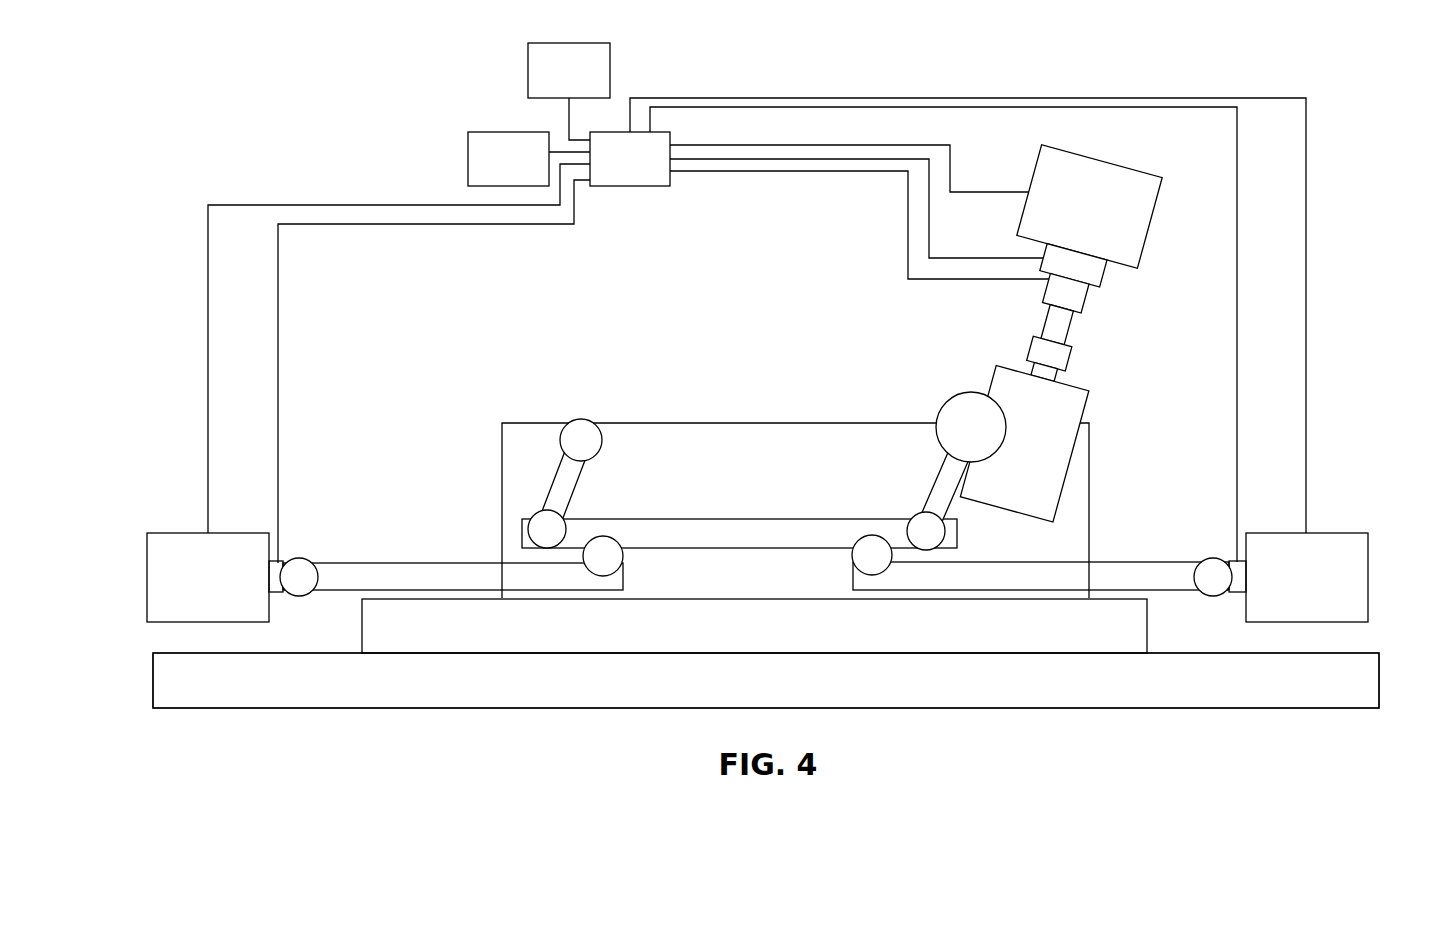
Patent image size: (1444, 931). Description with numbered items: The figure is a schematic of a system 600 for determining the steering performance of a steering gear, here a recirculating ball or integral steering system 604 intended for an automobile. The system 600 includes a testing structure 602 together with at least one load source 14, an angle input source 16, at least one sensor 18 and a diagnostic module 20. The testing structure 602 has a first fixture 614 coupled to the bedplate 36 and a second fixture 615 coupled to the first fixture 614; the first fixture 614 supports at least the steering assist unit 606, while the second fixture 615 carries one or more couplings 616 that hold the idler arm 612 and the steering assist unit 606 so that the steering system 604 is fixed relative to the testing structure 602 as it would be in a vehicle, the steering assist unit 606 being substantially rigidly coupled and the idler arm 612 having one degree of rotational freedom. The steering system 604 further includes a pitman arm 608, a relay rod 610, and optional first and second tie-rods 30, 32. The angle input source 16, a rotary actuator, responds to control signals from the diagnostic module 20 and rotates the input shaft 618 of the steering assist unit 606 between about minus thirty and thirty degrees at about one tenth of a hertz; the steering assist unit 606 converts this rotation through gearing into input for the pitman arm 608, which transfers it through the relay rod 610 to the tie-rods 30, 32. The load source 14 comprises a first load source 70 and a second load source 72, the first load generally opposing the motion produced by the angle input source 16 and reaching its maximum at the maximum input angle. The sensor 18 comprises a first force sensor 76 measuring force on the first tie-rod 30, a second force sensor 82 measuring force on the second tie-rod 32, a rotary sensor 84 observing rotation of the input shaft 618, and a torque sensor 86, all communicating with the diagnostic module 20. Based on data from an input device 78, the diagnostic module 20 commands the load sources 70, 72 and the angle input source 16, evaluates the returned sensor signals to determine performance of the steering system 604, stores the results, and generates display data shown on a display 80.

The system 600 is at (1229, 66).
The at least one load source 14 is at (150, 468).
The angle input source 16 is at (1147, 175).
The at least one sensor 18 is at (1155, 253).
The diagnostic module 20 is at (650, 185).
The input device 78 is at (556, 43).
The display 80 is at (495, 132).
The torque sensor 86 is at (1107, 270).
The rotary sensor 84 is at (1088, 290).
The input shaft 618 is at (1055, 373).
The steering assist unit 606 is at (981, 361).
The steering system 604 is at (1155, 376).
The couplings 616 is at (590, 412).
The second fixture 615 is at (755, 423).
The relay rod 610 is at (715, 513).
The idler arm 612 is at (538, 483).
The pitman arm 608 is at (922, 466).
The first load source 70 is at (190, 533).
The second load source 72 is at (1333, 533).
The first force sensor 76 is at (283, 562).
The second force sensor 82 is at (1235, 595).
The first tie-rod 30 is at (470, 563).
The second tie-rod 32 is at (1147, 562).
The first fixture 614 is at (362, 638).
The testing structure 602 is at (1360, 639).
The bedplate 36 is at (1253, 708).